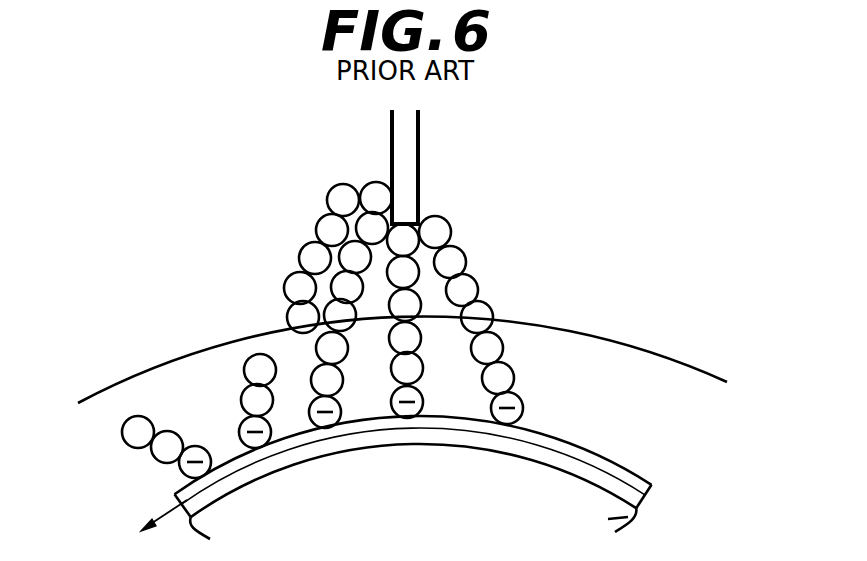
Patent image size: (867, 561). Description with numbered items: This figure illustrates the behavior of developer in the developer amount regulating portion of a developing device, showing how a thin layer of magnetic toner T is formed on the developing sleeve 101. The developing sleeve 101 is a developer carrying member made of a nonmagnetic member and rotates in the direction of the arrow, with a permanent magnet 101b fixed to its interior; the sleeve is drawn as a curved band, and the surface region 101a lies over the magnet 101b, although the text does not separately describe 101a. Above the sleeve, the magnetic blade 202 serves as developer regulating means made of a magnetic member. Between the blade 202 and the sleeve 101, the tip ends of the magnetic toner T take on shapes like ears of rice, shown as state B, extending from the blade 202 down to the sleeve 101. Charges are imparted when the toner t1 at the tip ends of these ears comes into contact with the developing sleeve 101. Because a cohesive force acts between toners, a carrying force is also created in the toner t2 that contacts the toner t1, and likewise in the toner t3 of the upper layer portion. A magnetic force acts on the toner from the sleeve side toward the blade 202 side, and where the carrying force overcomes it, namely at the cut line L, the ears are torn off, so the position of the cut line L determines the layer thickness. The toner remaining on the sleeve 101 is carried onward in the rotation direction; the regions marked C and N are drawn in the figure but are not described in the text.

The magnetic blade 202 is at (420, 152).
The cut line L is at (137, 373).
The magnetic toner T is at (488, 304).
The toner at tip ends t1 is at (180, 468).
The toner in contact with toner t1 t2 is at (152, 452).
The toner of the upper layer portion t3 is at (122, 432).
The developing sleeve 101 is at (483, 477).
The surface layer of image bearing member 101a is at (640, 476).
The permanent magnet 101b is at (637, 517).
The nip portion N is at (415, 467).
The toner cloud region C is at (261, 333).
The state B is at (626, 425).